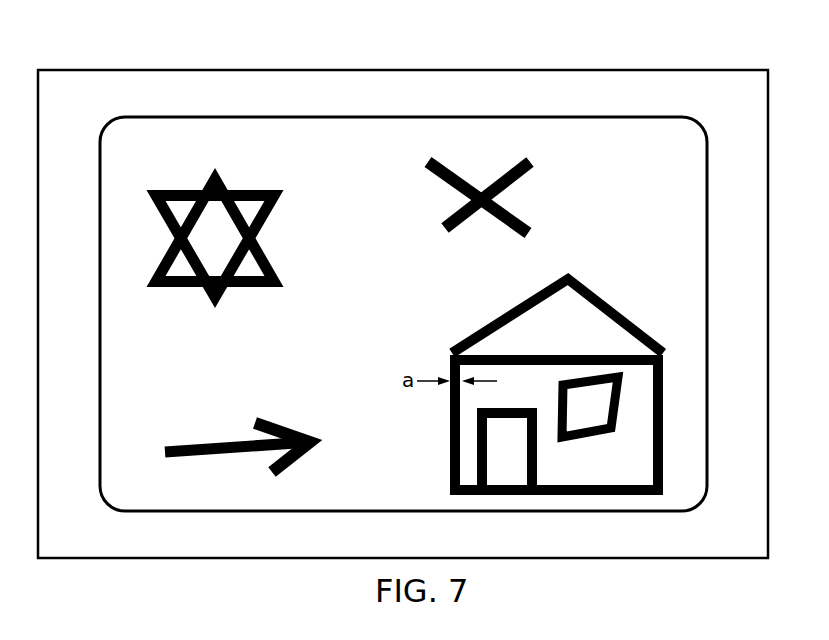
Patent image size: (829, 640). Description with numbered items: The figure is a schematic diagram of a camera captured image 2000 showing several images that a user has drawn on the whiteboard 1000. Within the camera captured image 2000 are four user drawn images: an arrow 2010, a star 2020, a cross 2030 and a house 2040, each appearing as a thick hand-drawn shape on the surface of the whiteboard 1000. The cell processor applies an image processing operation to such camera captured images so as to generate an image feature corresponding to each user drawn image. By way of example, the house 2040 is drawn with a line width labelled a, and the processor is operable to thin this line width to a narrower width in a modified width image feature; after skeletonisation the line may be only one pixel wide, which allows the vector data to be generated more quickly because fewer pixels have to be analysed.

The whiteboard 1000 is at (642, 135).
The camera captured image 2000 is at (117, 546).
The arrow 2010 is at (210, 440).
The star 2020 is at (287, 170).
The cross 2030 is at (513, 163).
The house 2040 is at (640, 283).